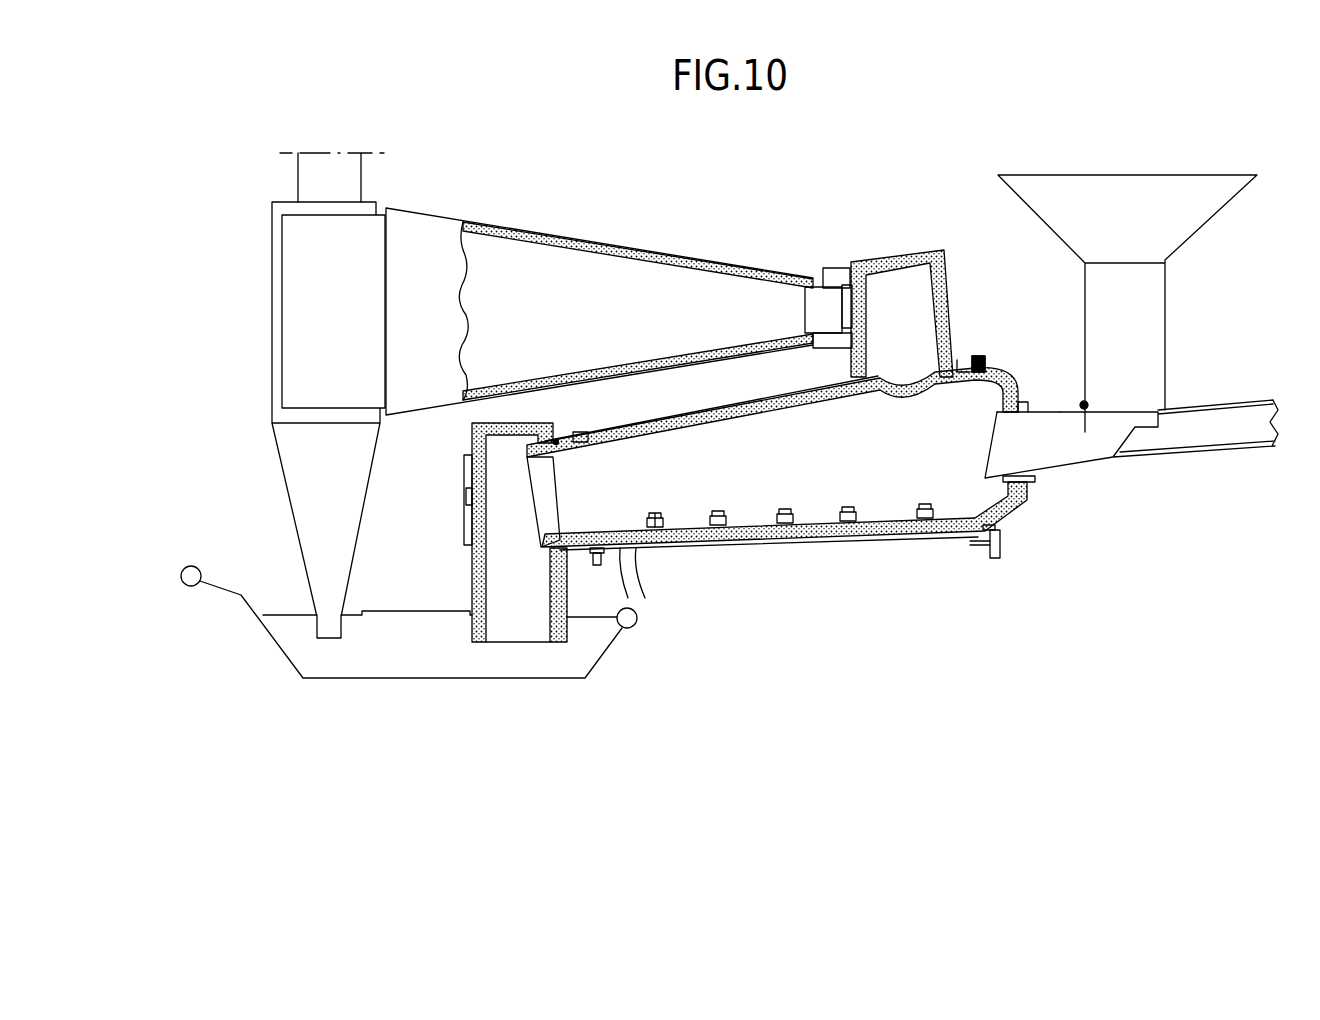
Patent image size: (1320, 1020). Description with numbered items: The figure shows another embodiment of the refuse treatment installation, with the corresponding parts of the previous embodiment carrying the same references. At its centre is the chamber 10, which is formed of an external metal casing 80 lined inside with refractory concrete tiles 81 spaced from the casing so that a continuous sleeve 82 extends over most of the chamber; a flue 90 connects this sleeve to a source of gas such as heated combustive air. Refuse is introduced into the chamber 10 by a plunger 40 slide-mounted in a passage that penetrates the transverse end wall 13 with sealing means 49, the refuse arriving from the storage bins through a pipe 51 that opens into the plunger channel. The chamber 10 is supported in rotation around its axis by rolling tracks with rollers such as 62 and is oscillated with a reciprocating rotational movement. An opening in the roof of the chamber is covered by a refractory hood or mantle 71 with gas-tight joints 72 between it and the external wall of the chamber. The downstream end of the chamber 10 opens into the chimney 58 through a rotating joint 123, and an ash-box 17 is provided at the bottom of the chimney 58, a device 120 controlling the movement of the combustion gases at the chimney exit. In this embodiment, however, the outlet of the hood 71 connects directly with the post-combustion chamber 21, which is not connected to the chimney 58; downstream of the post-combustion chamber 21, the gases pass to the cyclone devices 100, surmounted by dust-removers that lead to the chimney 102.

The chamber 10 is at (796, 480).
The transverse end wall 13 is at (1008, 392).
The ash-box 17 is at (600, 680).
The post-combustion chamber 21 is at (603, 265).
The plunger 40 is at (1183, 440).
The sealing means 49 is at (1022, 404).
The pipe 51 is at (1147, 323).
The chimney 58 is at (472, 580).
The roller 62 is at (1012, 550).
The hood or mantle 71 is at (938, 266).
The gas-tight joints 72 is at (960, 360).
The external metal casing 80 is at (712, 412).
The refractory concrete tiles 81 is at (733, 418).
The continuous sleeve 82 is at (748, 549).
The flue 90 is at (640, 575).
The cyclone devices 100 is at (305, 477).
The chimney 102 is at (305, 170).
The device to control the movement of combustion gases 120 is at (835, 277).
The rotating joint 123 is at (557, 442).